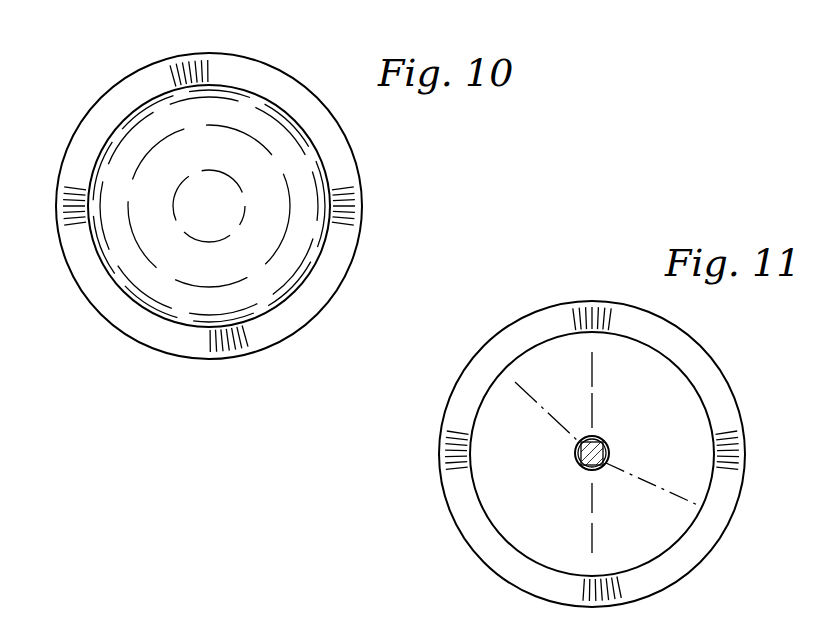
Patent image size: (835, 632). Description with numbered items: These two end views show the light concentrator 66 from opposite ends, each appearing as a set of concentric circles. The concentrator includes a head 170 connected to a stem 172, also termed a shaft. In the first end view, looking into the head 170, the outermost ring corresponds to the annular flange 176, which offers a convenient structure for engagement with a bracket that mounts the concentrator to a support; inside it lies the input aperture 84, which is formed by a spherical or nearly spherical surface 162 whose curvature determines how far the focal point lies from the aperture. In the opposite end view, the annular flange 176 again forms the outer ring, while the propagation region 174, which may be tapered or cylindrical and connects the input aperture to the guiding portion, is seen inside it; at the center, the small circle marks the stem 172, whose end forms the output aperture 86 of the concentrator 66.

In FIG. 10, the light concentrator 66 is at (283, 36).
In FIG. 11, the light concentrator 66 is at (745, 343).
In FIG. 10, the head 170 is at (290, 68).
In FIG. 11, the head 170 is at (661, 308).
In FIG. 10, the annular flange 176 is at (148, 60).
In FIG. 11, the annular flange 176 is at (522, 310).
In FIG. 10, the spherical or nearly spherical surface 162 is at (117, 168).
In FIG. 10, the input aperture 84 is at (223, 211).
In FIG. 11, the propagation region 174 is at (497, 418).
In FIG. 11, the output aperture 86 is at (609, 448).
In FIG. 11, the stem 172 is at (590, 472).